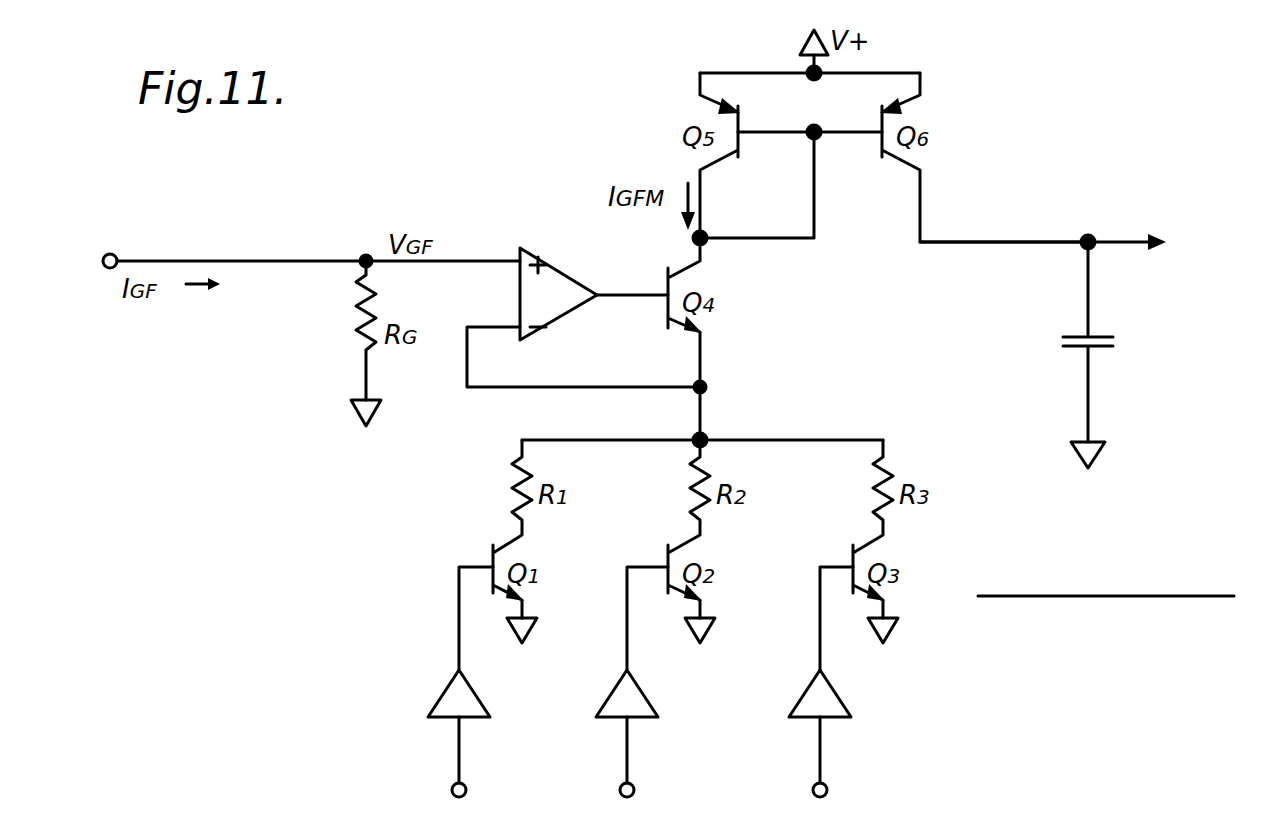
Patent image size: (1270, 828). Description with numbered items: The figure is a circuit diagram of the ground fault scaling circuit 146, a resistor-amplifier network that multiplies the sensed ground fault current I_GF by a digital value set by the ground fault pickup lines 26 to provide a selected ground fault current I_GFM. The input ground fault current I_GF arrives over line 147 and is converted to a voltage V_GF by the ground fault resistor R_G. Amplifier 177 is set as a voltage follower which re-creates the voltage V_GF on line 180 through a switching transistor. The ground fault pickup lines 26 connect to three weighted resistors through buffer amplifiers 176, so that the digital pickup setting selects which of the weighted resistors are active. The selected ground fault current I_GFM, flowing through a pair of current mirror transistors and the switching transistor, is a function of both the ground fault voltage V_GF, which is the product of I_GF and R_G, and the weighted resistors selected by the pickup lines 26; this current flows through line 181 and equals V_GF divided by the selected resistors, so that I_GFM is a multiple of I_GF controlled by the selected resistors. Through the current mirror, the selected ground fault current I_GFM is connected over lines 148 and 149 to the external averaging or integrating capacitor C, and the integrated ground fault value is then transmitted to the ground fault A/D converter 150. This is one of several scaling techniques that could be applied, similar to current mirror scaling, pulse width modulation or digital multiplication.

The line 147 is at (210, 260).
The amplifier 177 is at (557, 285).
The line 180 is at (563, 390).
The line 181 is at (705, 357).
The line 149 is at (1024, 219).
The line 148 is at (1087, 297).
The buffer amplifiers 176 is at (442, 694).
The ground fault pickup lines 26 is at (461, 762).
The ground fault scaling circuit 146 is at (1189, 536).
The A/D converter 150 is at (1177, 261).